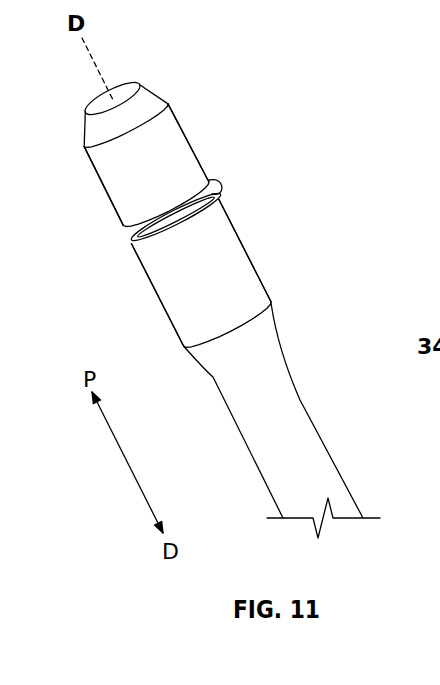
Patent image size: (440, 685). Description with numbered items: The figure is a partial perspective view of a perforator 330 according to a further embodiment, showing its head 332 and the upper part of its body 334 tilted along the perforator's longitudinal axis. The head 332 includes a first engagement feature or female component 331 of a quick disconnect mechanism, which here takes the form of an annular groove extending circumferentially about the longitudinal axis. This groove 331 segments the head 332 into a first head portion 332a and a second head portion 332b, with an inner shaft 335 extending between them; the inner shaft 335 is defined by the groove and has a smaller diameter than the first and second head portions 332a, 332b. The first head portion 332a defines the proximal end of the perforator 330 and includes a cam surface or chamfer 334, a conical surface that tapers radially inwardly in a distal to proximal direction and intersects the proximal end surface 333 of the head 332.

The perforator 330 is at (257, 35).
The female component 331 is at (221, 186).
The head 332 is at (122, 267).
The first head portion 332a is at (170, 150).
The second head portion 332b is at (237, 280).
The proximal end surface 333 is at (127, 88).
The cam surface 334 is at (147, 104).
The inner shaft 335 is at (130, 240).